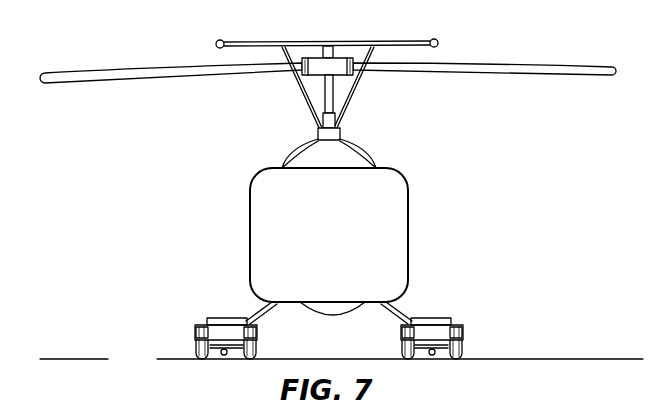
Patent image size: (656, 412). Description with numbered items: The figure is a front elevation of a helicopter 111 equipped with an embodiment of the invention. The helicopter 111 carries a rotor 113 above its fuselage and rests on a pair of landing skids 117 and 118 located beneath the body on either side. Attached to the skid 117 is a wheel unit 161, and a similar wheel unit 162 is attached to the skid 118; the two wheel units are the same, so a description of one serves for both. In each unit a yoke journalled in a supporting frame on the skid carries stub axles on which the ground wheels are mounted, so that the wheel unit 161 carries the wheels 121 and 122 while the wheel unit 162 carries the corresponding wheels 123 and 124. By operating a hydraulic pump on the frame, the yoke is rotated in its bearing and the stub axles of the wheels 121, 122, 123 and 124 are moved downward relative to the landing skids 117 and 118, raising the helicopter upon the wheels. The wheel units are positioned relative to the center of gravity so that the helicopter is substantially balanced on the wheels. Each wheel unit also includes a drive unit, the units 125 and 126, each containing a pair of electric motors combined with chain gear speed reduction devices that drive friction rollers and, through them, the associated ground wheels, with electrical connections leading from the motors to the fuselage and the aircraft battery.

The rotor 113 is at (607, 67).
The helicopter 111 is at (409, 185).
The wheel unit 161 is at (219, 329).
The wheel unit 162 is at (434, 327).
The unit 125 is at (246, 320).
The unit 126 is at (436, 318).
The wheel 121 is at (196, 350).
The wheel 122 is at (257, 352).
The wheel 123 is at (403, 345).
The wheel 124 is at (463, 351).
The landing skid 117 is at (224, 357).
The landing skid 118 is at (434, 356).